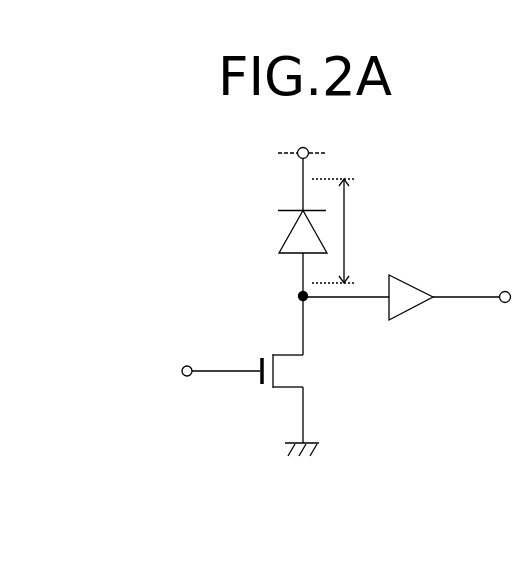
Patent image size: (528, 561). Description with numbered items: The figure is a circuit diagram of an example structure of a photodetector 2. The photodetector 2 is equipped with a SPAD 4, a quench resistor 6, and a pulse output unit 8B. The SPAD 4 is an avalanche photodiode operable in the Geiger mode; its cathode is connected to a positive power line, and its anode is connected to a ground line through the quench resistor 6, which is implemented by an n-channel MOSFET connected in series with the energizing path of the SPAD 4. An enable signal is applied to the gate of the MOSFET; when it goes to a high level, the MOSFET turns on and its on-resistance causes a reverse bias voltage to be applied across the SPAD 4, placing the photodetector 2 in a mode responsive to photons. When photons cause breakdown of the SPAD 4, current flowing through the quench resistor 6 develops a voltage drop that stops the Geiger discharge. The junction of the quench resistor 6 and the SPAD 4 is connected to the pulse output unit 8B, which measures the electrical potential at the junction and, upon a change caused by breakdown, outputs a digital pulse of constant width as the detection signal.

The photodetector 2 is at (415, 177).
The SPAD 4 is at (287, 240).
The quench resistor 6 is at (270, 350).
The pulse output unit 8B is at (405, 282).